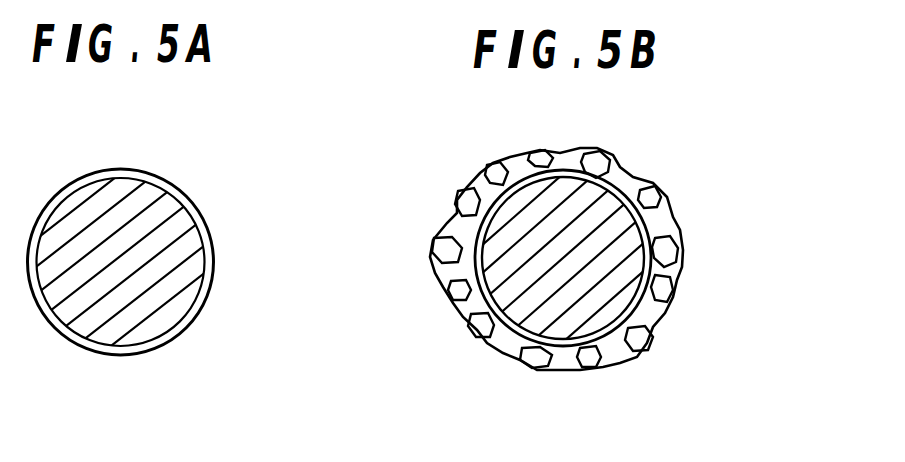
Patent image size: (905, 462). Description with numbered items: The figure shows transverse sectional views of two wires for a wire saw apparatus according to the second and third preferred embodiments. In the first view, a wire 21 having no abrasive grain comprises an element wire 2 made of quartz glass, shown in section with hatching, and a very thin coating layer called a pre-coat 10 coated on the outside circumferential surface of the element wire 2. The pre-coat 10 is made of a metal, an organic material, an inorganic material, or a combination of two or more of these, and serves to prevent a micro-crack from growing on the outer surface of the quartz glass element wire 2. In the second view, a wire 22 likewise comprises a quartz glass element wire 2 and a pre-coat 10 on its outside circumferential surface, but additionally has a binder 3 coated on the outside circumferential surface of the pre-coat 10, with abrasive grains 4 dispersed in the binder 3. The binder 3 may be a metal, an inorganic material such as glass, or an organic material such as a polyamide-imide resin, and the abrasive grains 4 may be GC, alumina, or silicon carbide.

In FIG. 5A, the wire 21 is at (187, 251).
In FIG. 5B, the wire 22 is at (587, 242).
In FIG. 5A, the element wire 2 is at (188, 241).
In FIG. 5B, the element wire 2 is at (667, 174).
In FIG. 5A, the pre-coat 10 is at (140, 356).
In FIG. 5B, the pre-coat 10 is at (680, 273).
In FIG. 5B, the binder 3 is at (460, 217).
In FIG. 5B, the abrasive grains 4 is at (437, 250).